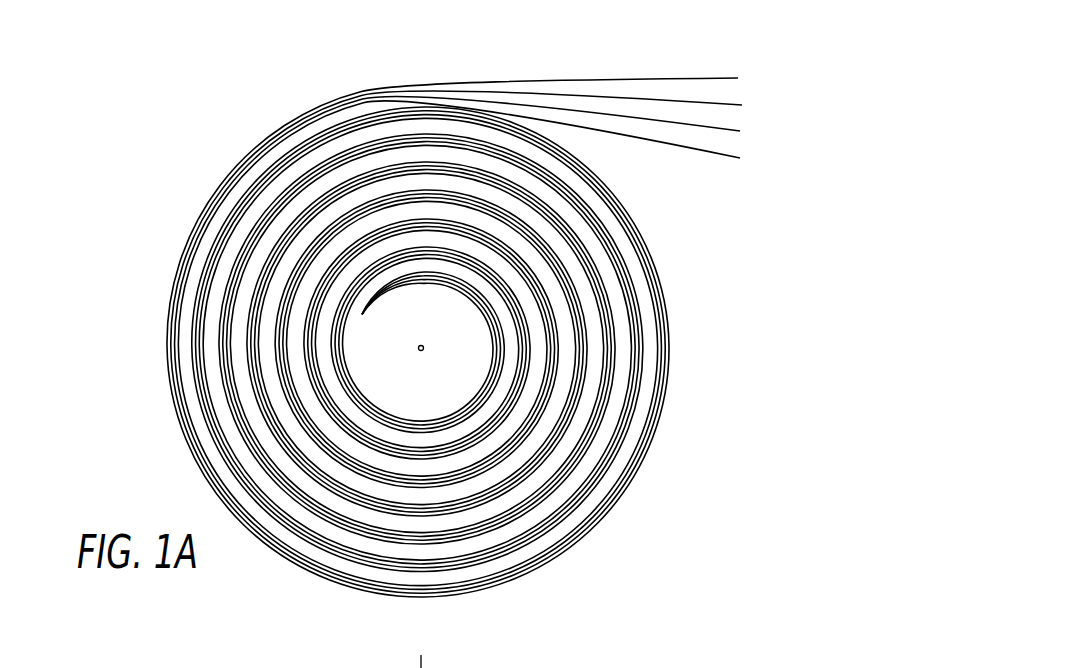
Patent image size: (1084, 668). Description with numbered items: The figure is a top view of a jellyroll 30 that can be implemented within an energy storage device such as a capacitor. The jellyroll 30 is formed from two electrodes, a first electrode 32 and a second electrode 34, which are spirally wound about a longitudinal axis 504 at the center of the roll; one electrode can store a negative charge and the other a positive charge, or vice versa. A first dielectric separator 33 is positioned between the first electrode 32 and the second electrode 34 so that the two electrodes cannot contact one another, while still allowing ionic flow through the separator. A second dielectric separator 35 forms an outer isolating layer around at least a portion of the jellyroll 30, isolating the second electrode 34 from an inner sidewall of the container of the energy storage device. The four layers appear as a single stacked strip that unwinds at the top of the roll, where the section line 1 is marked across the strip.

The section line 1- 1 is at (673, 64).
The jellyroll 30 is at (206, 136).
The first electrode 32 is at (728, 157).
The first dielectric separator 33 is at (728, 130).
The second electrode 34 is at (728, 103).
The second dielectric separator 35 is at (705, 78).
The longitudinal axis 504 is at (424, 348).